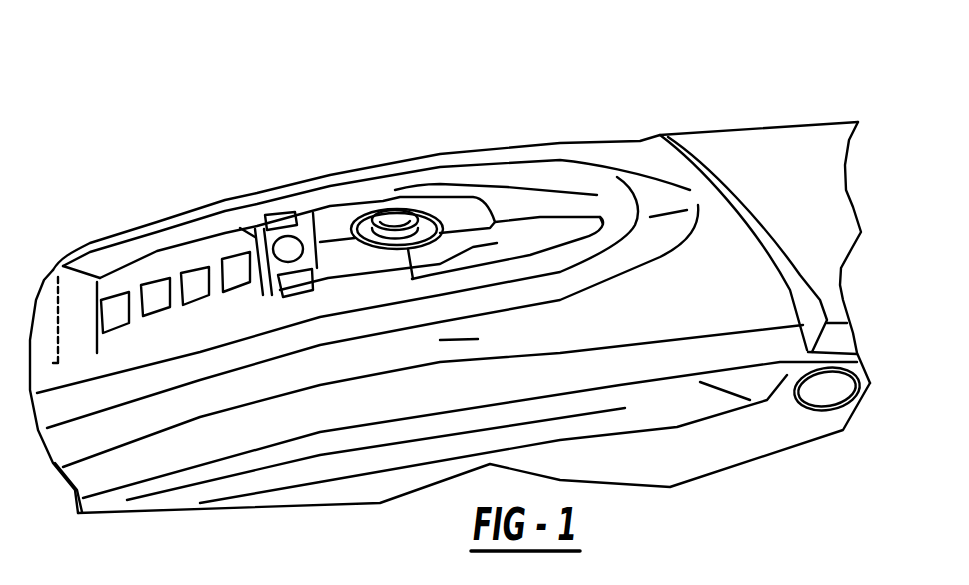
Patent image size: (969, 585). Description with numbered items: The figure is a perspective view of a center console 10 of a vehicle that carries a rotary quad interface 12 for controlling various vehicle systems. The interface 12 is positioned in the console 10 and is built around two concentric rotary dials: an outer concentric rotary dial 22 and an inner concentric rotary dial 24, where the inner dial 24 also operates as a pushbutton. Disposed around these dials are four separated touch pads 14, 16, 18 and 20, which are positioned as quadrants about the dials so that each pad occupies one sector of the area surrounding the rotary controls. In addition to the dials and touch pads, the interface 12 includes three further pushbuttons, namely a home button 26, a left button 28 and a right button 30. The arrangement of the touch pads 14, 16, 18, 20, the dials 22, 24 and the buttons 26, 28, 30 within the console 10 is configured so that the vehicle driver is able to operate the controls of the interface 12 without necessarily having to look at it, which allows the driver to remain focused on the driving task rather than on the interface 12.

The center console 10 is at (490, 124).
The rotary quad interface 12 is at (424, 193).
The touch pad 14 is at (397, 215).
The touch pad 16 is at (494, 247).
The touch pad 18 is at (330, 227).
The touch pad 20 is at (350, 261).
The outer concentric rotary dial 22 is at (492, 223).
The inner concentric rotary dial 24 is at (374, 218).
The home button 26 is at (272, 250).
The left button 28 is at (285, 215).
The right button 30 is at (290, 283).